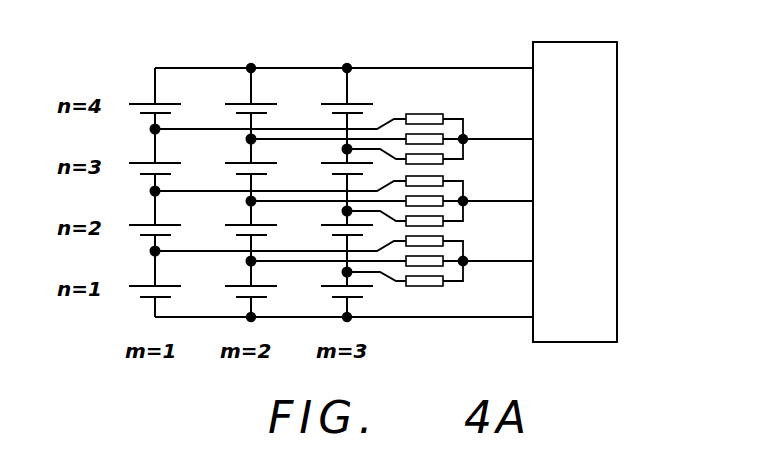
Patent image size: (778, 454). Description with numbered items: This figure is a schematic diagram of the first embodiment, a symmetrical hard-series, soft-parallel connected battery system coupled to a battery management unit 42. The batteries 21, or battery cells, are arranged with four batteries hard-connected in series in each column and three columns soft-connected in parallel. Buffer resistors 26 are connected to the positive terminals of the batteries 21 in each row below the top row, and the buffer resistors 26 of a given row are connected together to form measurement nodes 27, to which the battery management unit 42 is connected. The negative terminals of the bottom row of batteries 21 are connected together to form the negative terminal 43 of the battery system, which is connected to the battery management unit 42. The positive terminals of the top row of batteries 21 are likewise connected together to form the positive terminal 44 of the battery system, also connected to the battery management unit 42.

The battery 21 is at (267, 102).
The buffer resistor 26 is at (421, 113).
The measurement node 27 is at (463, 135).
The battery management unit 42 is at (580, 342).
The negative terminal 43 is at (473, 317).
The positive bus line 44 is at (207, 68).